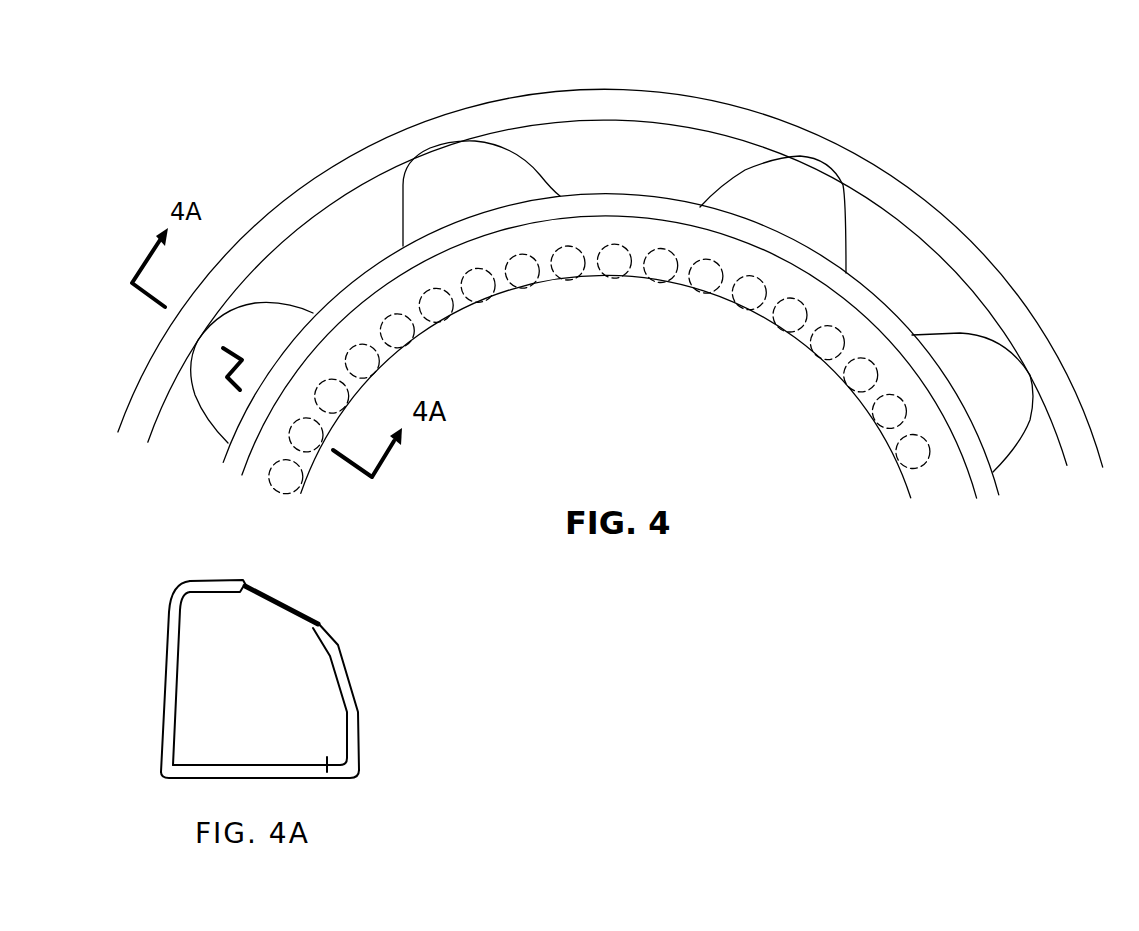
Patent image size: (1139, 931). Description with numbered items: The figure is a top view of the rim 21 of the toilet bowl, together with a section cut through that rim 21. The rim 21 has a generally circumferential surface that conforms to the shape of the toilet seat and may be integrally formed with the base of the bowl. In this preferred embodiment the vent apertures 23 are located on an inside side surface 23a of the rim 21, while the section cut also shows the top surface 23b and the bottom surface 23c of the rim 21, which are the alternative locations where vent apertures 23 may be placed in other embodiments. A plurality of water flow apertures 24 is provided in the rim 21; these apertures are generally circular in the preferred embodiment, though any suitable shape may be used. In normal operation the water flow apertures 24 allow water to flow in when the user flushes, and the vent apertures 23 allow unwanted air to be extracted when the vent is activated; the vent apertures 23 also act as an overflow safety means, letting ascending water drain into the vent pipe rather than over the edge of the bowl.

In FIG. 4, the rim 21 is at (293, 192).
In FIG. 4A, the rim 21 is at (125, 750).
In FIG. 4, the vent apertures 23 is at (493, 125).
In FIG. 4A, the vent apertures 23 is at (300, 622).
In FIG. 4, the side surface 23a is at (630, 150).
In FIG. 4A, the side surface 23a is at (347, 635).
In FIG. 4, the top surface 23b is at (946, 222).
In FIG. 4A, the top surface 23b is at (208, 575).
In FIG. 4, the bottom surface 23c is at (640, 292).
In FIG. 4A, the bottom surface 23c is at (212, 783).
In FIG. 4, the water flow apertures 24 is at (750, 297).
In FIG. 4A, the water flow apertures 24 is at (330, 768).